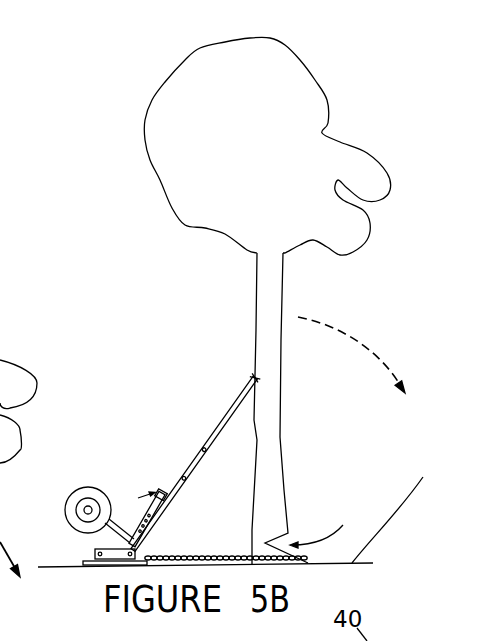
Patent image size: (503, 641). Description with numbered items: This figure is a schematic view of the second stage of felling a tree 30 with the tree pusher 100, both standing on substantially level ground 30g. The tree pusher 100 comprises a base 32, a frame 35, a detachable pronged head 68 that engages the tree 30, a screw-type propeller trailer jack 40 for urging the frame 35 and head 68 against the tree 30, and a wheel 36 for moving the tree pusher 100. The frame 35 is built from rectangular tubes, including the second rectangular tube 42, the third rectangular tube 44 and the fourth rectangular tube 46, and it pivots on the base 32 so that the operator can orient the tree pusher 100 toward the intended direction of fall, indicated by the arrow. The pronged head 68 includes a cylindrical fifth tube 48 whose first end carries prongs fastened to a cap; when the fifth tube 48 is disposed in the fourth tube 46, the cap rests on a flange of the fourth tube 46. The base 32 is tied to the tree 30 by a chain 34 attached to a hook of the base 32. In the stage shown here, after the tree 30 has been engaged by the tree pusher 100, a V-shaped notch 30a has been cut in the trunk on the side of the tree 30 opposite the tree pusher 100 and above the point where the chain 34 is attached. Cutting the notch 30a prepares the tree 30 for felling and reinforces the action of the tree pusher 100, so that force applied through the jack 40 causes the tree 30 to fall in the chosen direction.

The tree 30 is at (280, 413).
The V-shaped notch 30a is at (335, 524).
The ground 30g is at (407, 504).
The base 32 is at (95, 562).
The chain 34 is at (193, 555).
The frame 35 is at (160, 459).
The wheel 36 is at (63, 510).
The screw-type propeller trailer jack 40 is at (124, 502).
The second rectangular tube 42 is at (147, 552).
The third rectangular tube 44 is at (200, 462).
The fourth rectangular tube 46 is at (223, 413).
The fifth tube 48 is at (240, 388).
The pronged head 68 is at (253, 377).
The tree pusher 100 is at (166, 460).